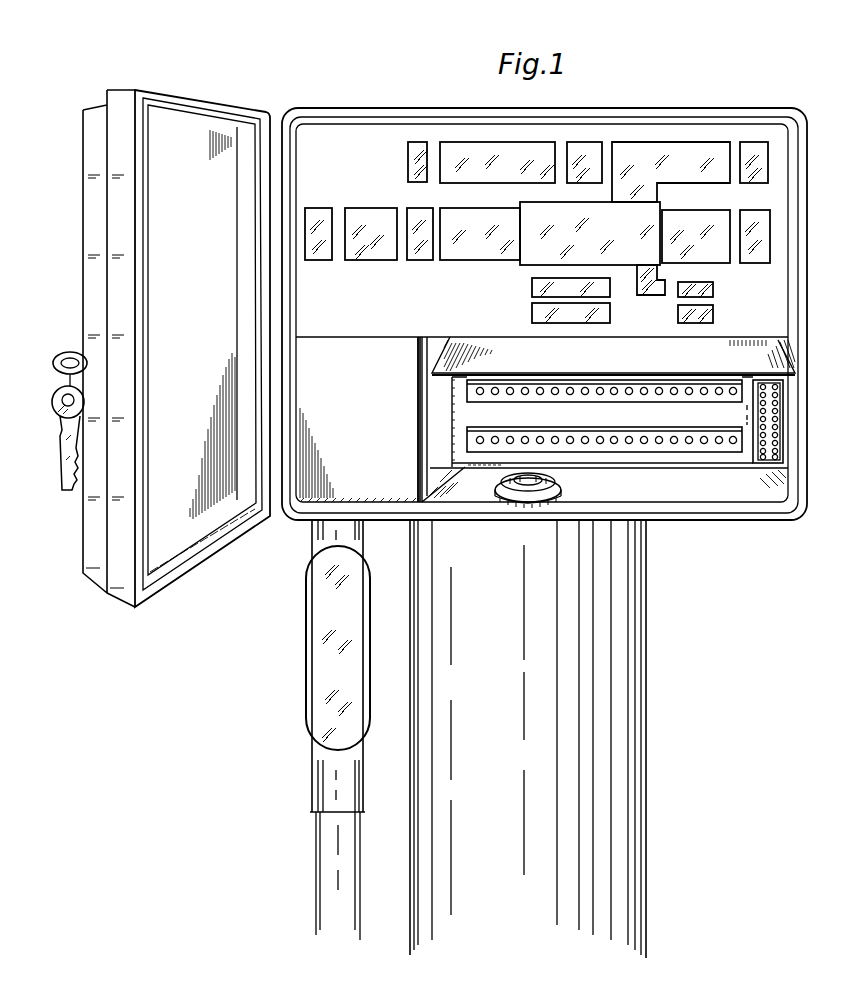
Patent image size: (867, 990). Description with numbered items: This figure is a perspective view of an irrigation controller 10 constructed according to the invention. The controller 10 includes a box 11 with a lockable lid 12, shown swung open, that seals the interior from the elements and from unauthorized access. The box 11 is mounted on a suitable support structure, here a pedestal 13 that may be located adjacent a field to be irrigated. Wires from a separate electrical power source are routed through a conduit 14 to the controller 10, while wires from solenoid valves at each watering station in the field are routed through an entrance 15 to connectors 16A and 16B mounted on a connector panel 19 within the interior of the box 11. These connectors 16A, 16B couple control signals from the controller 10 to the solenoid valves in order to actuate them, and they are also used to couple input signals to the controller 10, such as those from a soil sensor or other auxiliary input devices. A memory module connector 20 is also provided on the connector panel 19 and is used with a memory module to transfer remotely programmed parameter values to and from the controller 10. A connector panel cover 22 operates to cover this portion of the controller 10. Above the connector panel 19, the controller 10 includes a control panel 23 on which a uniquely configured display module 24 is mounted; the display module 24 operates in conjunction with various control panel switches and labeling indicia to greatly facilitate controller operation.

The irrigation controller 10 is at (237, 51).
The box 11 is at (753, 88).
The lockable lid 12 is at (193, 78).
The pedestal 13 is at (645, 678).
The conduit 14 is at (318, 656).
The entrance 15 is at (523, 484).
The connector 16A is at (468, 397).
The connector 16B is at (483, 450).
The connector panel 19 is at (650, 462).
The memory module connector 20 is at (770, 463).
The connector panel cover 22 is at (682, 372).
The control panel 23 is at (756, 318).
The display module 24 is at (603, 212).